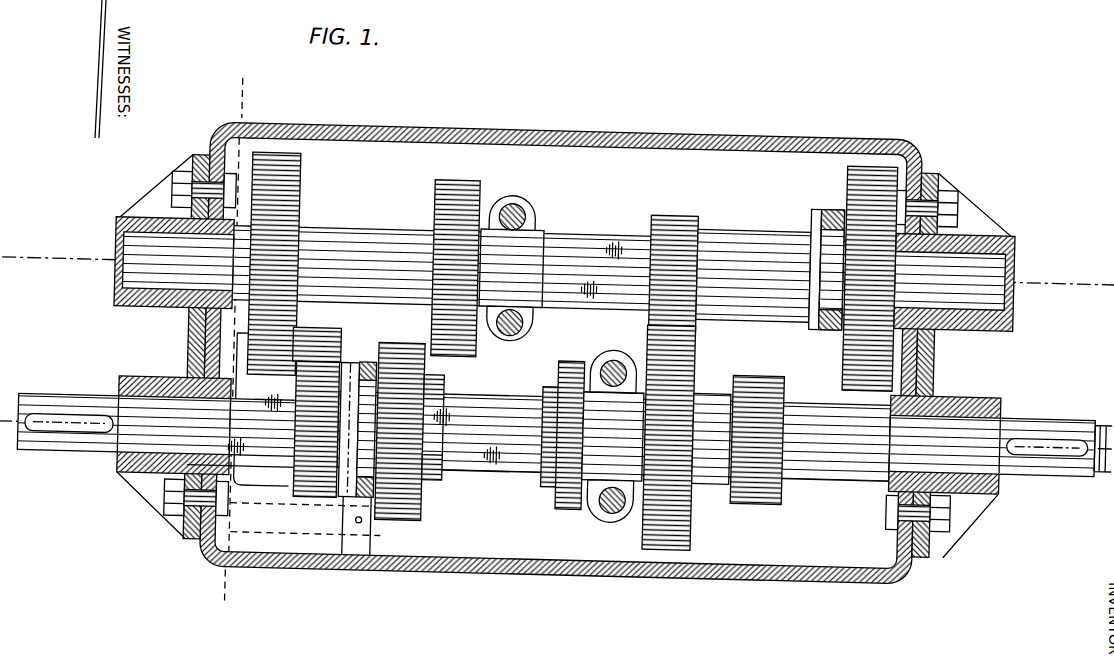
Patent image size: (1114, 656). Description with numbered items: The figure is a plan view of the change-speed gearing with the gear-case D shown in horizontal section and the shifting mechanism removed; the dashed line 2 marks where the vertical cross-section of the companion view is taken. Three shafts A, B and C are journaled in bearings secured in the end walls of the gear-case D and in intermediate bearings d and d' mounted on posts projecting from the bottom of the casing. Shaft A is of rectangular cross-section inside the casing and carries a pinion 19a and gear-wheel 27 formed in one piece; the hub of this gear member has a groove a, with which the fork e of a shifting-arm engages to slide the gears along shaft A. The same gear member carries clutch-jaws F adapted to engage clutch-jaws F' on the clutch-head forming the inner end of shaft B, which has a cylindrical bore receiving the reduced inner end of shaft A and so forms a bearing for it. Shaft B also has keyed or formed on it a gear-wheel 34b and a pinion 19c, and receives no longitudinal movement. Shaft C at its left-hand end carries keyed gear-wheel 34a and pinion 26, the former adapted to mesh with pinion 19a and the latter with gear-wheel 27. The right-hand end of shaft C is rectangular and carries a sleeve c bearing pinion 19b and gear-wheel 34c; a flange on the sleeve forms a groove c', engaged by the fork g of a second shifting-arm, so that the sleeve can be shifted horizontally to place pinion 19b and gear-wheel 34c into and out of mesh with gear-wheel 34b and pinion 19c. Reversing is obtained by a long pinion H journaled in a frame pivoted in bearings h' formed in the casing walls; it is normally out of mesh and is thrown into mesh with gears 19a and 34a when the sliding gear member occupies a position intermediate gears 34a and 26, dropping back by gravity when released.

The section line 2 2 is at (234, 341).
The gear-case D is at (559, 574).
The shaft C is at (340, 237).
The shaft A is at (135, 448).
The shaft B is at (838, 474).
The gear-wheel 34a is at (289, 332).
The pinion 26 is at (459, 187).
The intermediate bearing d is at (518, 268).
The pinion 19b is at (680, 210).
The sleeve c is at (753, 286).
The groove c' is at (814, 255).
The fork g is at (822, 325).
The gear-wheel 34c is at (850, 338).
The bearings h' is at (243, 480).
The long pinion H is at (337, 336).
The pinion 19a is at (304, 505).
The groove a is at (366, 428).
The fork e is at (370, 367).
The gear-wheel 27 is at (425, 518).
The clutch-jaws F is at (463, 424).
The clutch-jaws F' is at (559, 430).
The intermediate bearing d' is at (612, 440).
The gear-wheel 34b is at (698, 373).
The pinion 19c is at (762, 500).